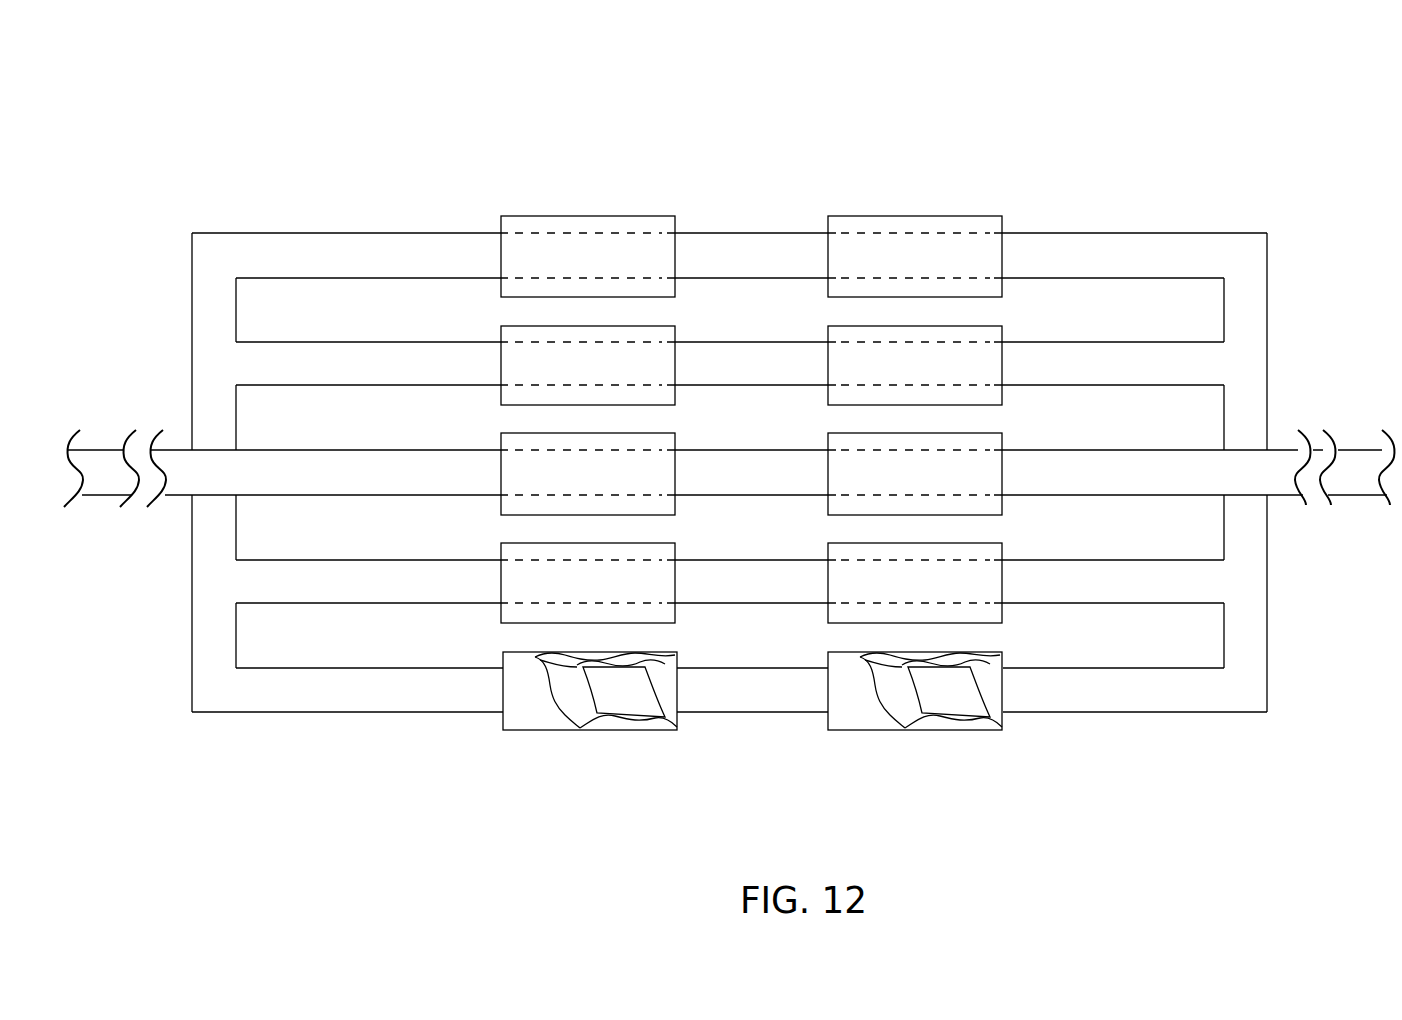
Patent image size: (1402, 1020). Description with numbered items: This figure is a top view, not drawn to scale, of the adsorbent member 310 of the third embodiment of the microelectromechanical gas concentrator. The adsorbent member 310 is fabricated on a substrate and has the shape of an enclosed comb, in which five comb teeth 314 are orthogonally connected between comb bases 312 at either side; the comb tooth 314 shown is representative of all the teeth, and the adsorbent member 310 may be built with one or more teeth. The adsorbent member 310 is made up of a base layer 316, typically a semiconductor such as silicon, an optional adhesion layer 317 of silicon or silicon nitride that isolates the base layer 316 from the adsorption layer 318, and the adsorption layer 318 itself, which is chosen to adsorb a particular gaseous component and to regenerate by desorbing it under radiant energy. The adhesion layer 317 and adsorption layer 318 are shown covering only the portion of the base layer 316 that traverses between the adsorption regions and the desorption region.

The adsorbent member 310 is at (452, 152).
The comb bases 312 is at (187, 473).
The comb tooth 314 is at (1163, 695).
The base layer 316 is at (623, 700).
The adhesion layer 317 is at (572, 700).
The adsorption layer 318 is at (527, 705).